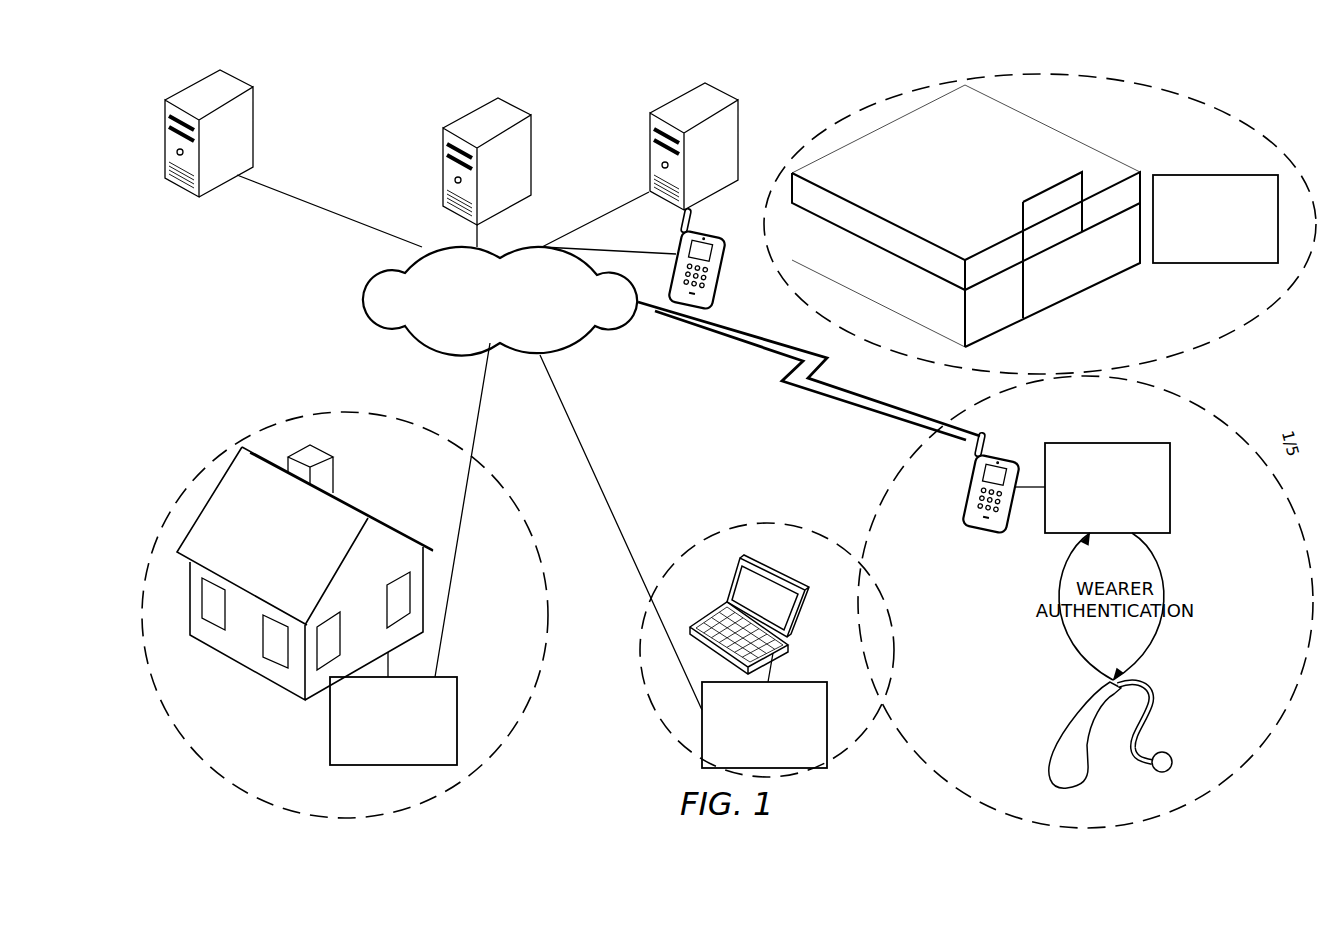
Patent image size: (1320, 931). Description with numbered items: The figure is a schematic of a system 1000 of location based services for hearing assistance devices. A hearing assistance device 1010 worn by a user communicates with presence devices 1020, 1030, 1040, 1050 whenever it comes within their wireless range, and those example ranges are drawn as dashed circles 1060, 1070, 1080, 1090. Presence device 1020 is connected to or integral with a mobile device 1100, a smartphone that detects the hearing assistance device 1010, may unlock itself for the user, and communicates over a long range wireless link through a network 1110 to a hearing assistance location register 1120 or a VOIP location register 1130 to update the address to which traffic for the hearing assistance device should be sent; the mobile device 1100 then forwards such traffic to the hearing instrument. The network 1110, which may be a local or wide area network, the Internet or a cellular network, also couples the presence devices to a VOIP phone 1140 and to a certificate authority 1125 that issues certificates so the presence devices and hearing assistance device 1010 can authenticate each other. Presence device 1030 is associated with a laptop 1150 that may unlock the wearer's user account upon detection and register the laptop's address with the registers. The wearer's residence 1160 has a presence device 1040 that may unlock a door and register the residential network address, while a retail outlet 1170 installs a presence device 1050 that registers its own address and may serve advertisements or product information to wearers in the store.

The system 1000 is at (214, 337).
The hearing assistance device 1010 is at (1137, 727).
The presence device 1020 is at (1170, 493).
The presence device 1030 is at (827, 756).
The presence device 1040 is at (330, 757).
The presence device 1050 is at (1193, 263).
The wireless range 1060 is at (1193, 398).
The wireless range 1070 is at (691, 548).
The wireless range 1080 is at (267, 422).
The wireless range 1090 is at (1220, 110).
The mobile device 1100 is at (968, 487).
The network 1110 is at (595, 327).
The hearing assistance location register 1120 is at (478, 108).
The certificate authority 1125 is at (723, 103).
The VOIP location register 1130 is at (253, 107).
The VOIP phone 1140 is at (712, 306).
The laptop 1150 is at (740, 558).
The residence 1160 is at (333, 491).
The retail outlet 1170 is at (1023, 318).